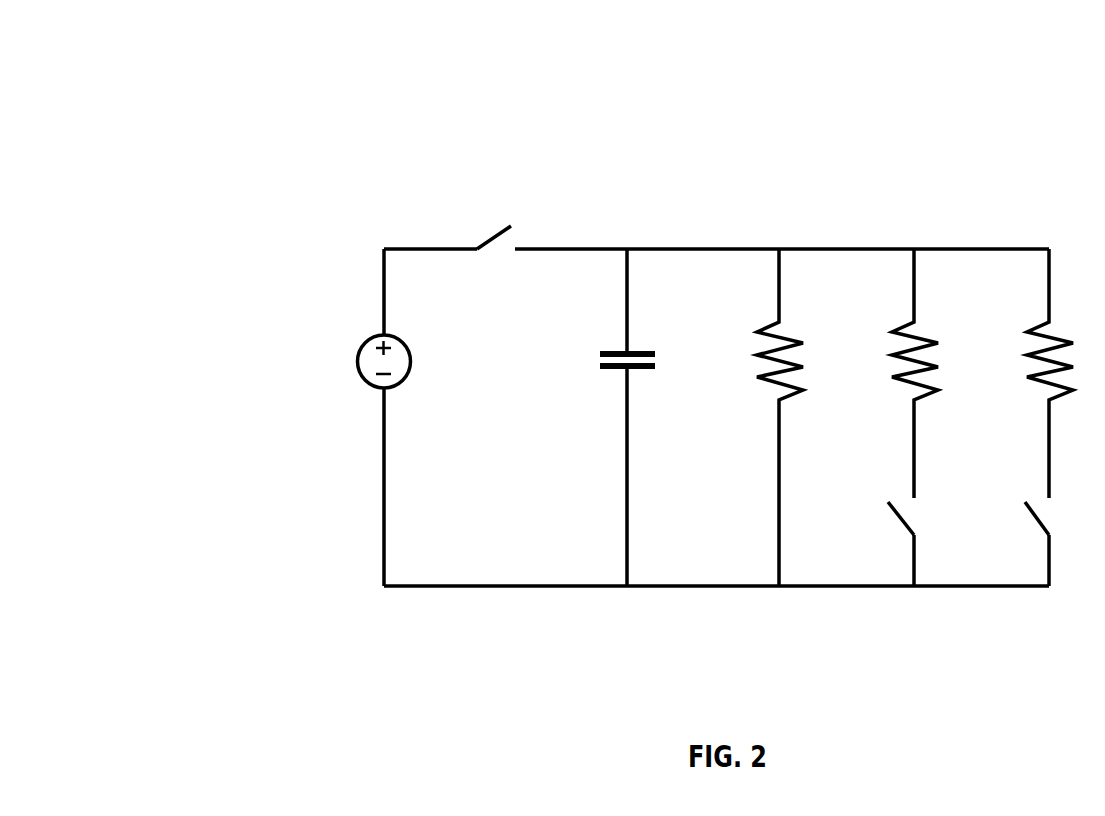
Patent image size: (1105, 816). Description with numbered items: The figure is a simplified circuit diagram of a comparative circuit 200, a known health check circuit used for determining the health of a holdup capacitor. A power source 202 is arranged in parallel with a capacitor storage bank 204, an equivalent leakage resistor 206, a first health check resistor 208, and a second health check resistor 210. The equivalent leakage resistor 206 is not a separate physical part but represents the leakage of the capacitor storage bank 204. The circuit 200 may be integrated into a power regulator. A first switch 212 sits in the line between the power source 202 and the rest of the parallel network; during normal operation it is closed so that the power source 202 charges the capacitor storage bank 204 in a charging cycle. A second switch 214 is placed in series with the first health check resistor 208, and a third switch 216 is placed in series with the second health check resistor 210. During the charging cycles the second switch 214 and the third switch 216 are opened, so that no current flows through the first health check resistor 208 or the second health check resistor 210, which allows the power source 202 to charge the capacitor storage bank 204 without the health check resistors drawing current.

The comparative circuit 200 is at (212, 98).
The power source 202 is at (372, 338).
The capacitor storage bank 204 is at (627, 380).
The equivalent leakage resistor 206 is at (758, 378).
The first health check resistor 208 is at (892, 377).
The second health check resistor 210 is at (1027, 377).
The first switch 212 is at (493, 237).
The second switch 214 is at (915, 531).
The third switch 216 is at (1051, 532).